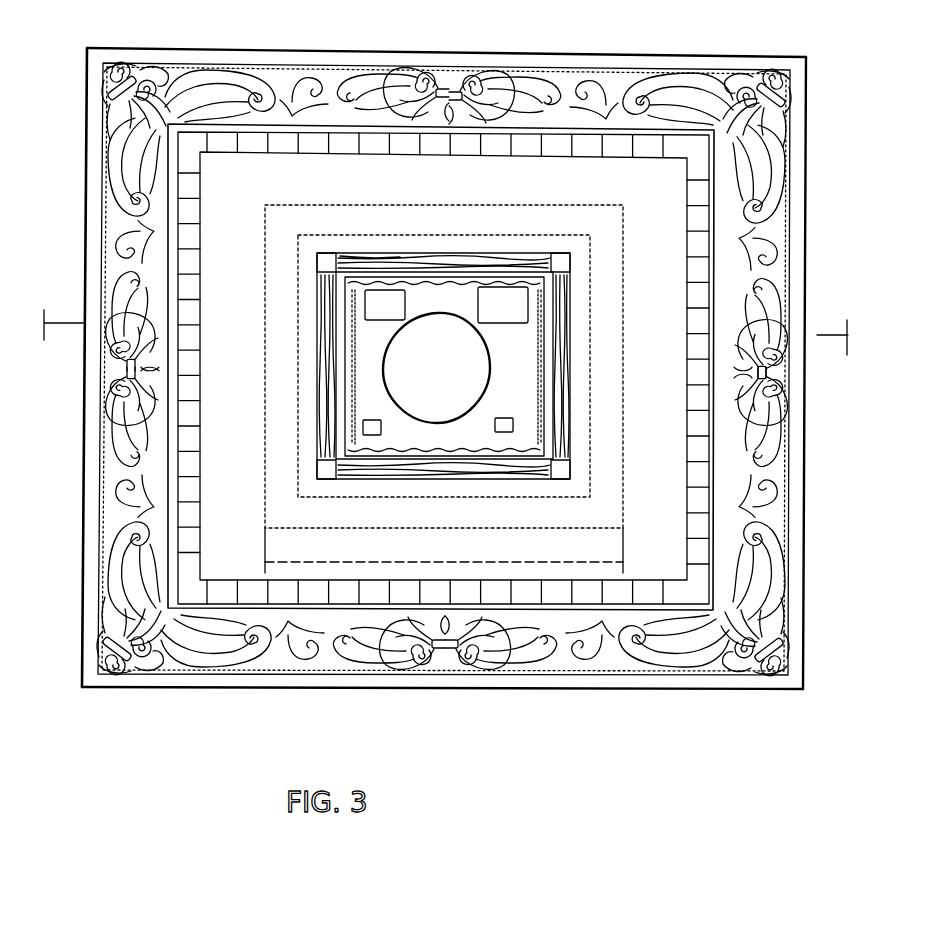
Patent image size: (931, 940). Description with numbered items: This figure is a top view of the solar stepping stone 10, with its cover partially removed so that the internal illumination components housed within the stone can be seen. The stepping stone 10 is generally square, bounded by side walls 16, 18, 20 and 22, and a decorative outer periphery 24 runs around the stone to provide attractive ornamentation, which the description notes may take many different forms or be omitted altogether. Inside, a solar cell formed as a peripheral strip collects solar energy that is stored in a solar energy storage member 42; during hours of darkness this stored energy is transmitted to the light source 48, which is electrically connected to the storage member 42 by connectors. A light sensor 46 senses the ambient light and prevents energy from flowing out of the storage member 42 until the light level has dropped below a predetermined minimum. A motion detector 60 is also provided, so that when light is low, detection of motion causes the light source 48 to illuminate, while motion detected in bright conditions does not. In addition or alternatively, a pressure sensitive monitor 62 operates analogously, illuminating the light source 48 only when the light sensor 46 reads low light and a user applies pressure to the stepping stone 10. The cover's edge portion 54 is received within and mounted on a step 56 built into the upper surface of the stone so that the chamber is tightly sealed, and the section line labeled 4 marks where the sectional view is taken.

The solar stepping stone 10 is at (144, 725).
The side wall 16 is at (575, 689).
The side wall 18 is at (804, 430).
The side wall 20 is at (241, 47).
The side wall 22 is at (83, 503).
The decorative outer periphery 24 is at (765, 493).
The solar energy storage member 42 is at (511, 293).
The light sensor 46 is at (566, 365).
The light source 48 is at (396, 358).
The edge portion 54 is at (452, 283).
The step 56 is at (607, 517).
The motion detector 60 is at (513, 427).
The pressure sensitive monitor 62 is at (355, 437).
The section line 4- 4 is at (446, 347).